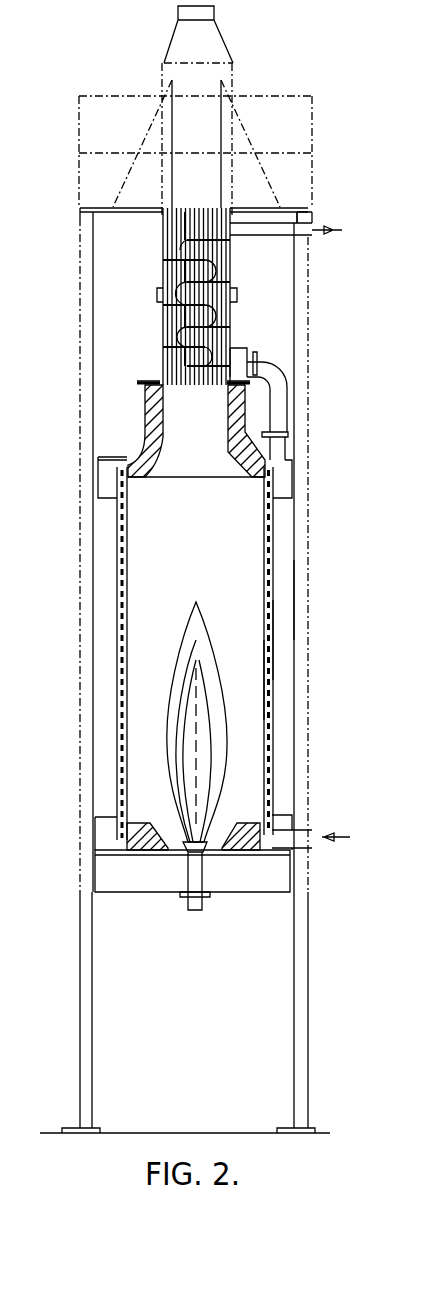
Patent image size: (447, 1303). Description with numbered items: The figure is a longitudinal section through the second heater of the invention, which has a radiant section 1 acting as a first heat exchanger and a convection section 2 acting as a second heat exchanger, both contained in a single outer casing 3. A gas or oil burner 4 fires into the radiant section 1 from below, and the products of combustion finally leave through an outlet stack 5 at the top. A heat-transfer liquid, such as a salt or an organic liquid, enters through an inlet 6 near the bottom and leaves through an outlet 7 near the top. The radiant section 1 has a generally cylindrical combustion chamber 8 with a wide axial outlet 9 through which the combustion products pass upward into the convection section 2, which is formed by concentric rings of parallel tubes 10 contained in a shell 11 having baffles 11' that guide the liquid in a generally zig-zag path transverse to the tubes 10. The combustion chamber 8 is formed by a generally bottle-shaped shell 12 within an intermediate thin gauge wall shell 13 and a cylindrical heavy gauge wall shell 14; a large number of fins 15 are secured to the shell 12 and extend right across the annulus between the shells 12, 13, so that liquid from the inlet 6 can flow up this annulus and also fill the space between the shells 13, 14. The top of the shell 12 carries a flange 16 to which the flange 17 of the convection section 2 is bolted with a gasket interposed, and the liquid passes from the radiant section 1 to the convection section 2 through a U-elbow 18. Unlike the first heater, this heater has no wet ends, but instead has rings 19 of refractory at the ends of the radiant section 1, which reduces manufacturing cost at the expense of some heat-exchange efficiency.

The radiant section 1 is at (277, 722).
The convection section 2 is at (148, 312).
The outer casing 3 is at (80, 497).
The burner 4 is at (192, 860).
The outlet stack 5 is at (203, 33).
The inlet 6 is at (302, 838).
The outlet 7 is at (316, 223).
The combustion chamber 8 is at (135, 665).
The axial outlet 9 is at (183, 425).
The parallel tubes 10 is at (165, 330).
The shell 11 is at (134, 294).
The baffles 11' is at (265, 289).
The bottle-shaped shell 12 is at (263, 560).
The intermediate thin gauge wall shell 13 is at (277, 600).
The cylindrical heavy gauge wall shell 14 is at (277, 640).
The fins 15 is at (270, 677).
The flange 16 is at (139, 389).
The flange 17 is at (147, 381).
The U-elbow 18 is at (278, 388).
The rings of refractory 19 is at (245, 458).